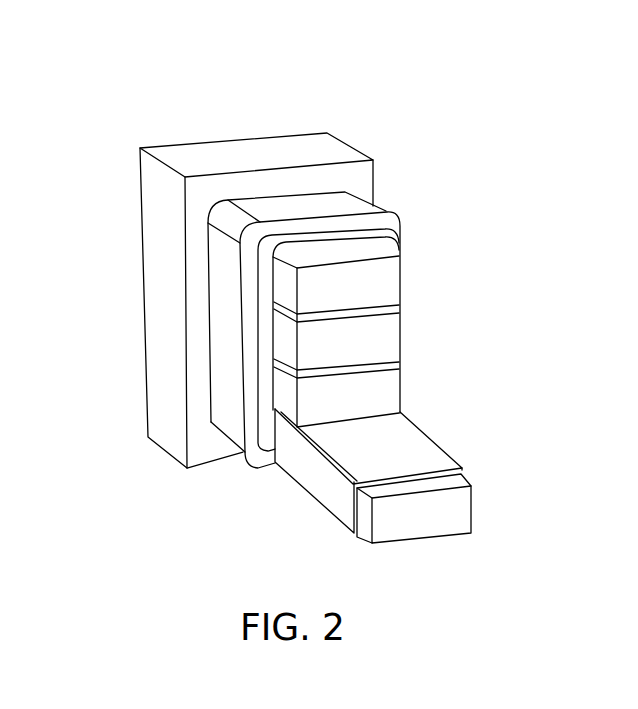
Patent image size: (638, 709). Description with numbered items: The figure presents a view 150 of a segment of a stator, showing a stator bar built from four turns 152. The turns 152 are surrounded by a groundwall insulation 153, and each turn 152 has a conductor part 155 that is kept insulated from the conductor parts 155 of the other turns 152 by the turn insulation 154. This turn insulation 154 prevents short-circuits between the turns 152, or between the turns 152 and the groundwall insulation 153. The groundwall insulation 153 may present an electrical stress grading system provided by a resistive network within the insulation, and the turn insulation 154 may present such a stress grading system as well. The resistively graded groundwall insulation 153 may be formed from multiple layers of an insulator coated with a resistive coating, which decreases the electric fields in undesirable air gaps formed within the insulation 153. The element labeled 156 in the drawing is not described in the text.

The view 150 is at (165, 112).
The turns 152 is at (382, 287).
The groundwall insulation 153 is at (398, 222).
The turn insulation 154 is at (428, 430).
The conductor part 155 is at (437, 512).
The base unit 156 is at (355, 175).